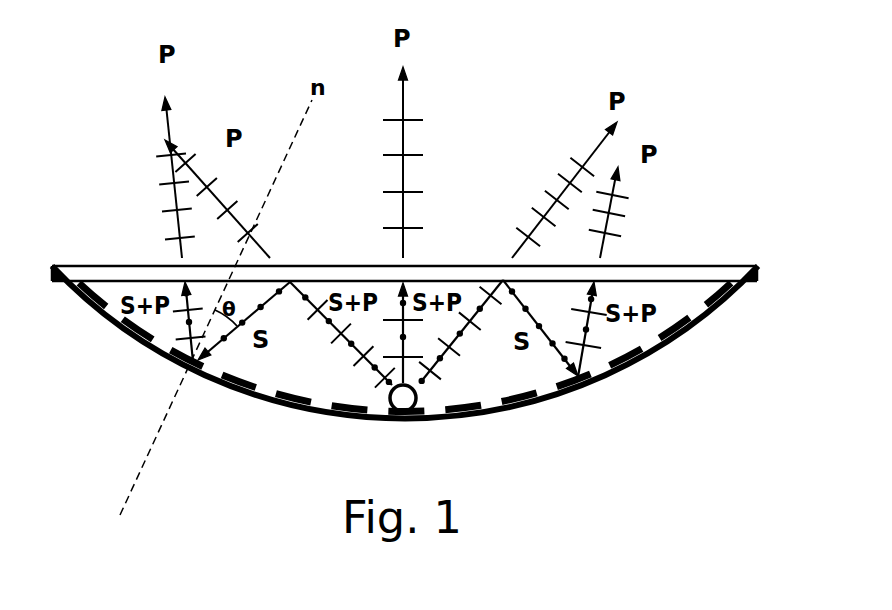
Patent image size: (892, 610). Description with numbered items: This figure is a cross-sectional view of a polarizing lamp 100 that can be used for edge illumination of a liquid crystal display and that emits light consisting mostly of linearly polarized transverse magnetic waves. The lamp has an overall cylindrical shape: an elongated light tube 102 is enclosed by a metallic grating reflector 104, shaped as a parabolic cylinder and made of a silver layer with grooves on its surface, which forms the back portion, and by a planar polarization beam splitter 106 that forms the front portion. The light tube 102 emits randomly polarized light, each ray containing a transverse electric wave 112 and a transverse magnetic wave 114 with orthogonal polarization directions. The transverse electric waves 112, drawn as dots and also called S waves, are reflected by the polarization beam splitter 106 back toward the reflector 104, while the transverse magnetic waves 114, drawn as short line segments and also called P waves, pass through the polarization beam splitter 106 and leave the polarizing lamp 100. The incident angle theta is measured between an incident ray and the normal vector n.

The polarizing lamp 100 is at (703, 160).
The light tube 102 is at (417, 396).
The metallic grating reflector 104 is at (642, 365).
The polarization beam splitter 106 is at (640, 265).
The transverse electric (TE) wave 112 is at (268, 299).
The transverse magnetic (TM) wave 114 is at (262, 226).